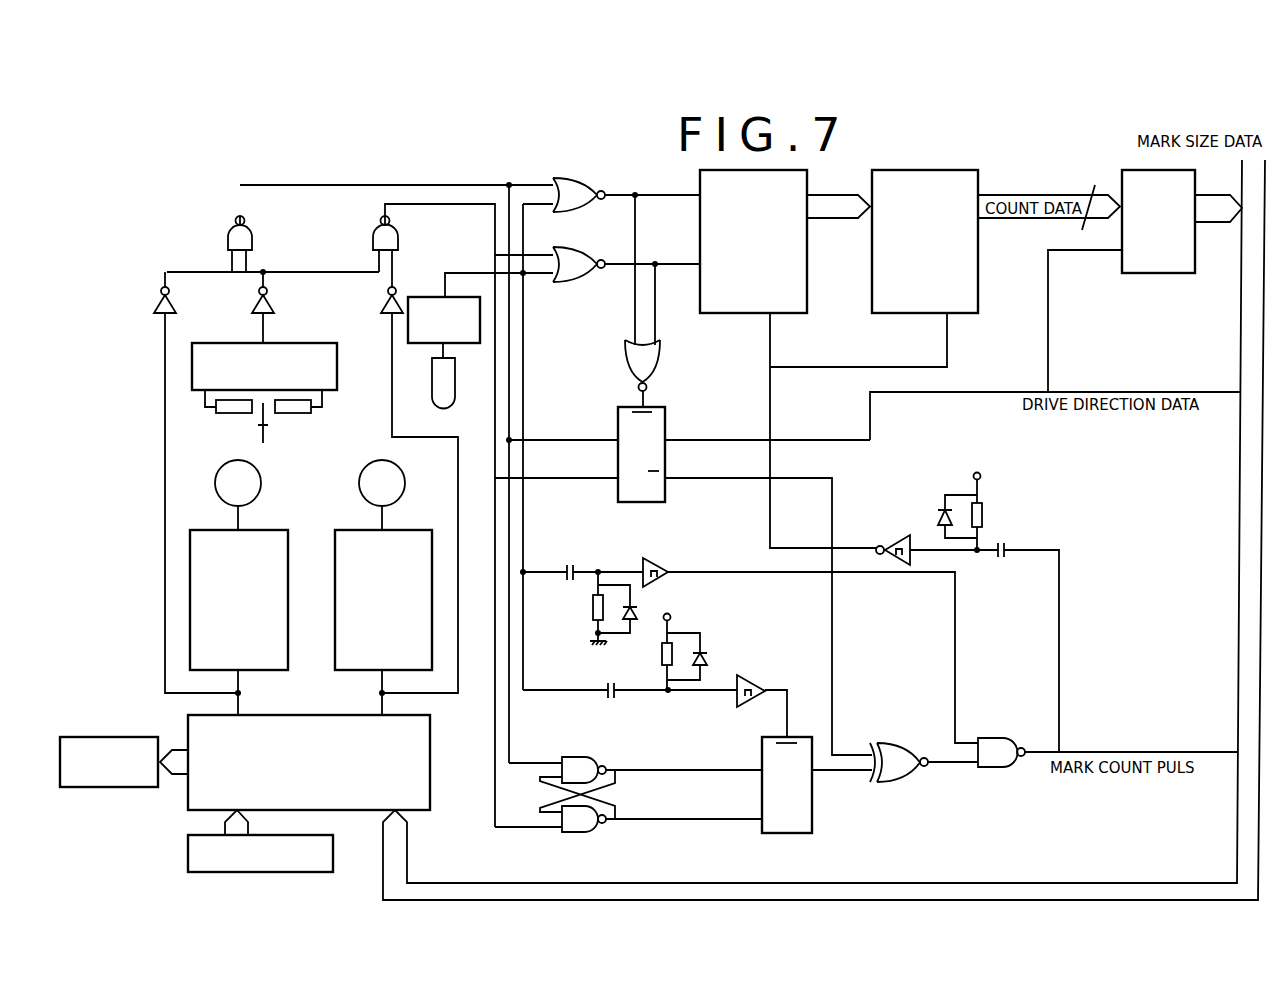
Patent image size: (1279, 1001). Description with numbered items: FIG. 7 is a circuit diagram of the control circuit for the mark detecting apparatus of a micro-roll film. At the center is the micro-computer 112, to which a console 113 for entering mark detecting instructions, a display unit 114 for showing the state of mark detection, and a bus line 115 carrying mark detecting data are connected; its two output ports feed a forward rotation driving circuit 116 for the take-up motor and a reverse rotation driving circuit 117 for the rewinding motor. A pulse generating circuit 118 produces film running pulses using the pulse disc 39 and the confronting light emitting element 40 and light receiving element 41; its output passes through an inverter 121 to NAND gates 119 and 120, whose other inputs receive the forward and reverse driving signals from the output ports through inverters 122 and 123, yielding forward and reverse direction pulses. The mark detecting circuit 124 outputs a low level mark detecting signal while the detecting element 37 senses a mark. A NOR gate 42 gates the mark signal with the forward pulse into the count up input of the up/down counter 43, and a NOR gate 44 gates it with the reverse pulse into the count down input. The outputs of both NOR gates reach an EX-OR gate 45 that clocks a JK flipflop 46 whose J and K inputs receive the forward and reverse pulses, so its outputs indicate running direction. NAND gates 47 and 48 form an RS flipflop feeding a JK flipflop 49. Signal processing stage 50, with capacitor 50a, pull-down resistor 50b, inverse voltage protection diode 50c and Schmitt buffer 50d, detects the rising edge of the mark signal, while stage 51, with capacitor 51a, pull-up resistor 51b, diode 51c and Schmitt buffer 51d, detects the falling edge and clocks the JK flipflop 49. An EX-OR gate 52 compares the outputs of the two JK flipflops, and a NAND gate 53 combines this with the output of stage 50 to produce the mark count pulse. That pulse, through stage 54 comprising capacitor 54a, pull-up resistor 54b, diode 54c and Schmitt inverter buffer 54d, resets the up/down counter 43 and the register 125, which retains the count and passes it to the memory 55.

The NAND gate 119 is at (230, 228).
The NAND gate 120 is at (412, 224).
The inverter 121 is at (282, 296).
The inverter 122 is at (158, 303).
The inverter 123 is at (400, 299).
The mark detecting circuit 124 is at (466, 296).
The pulse generating circuit 118 is at (318, 333).
The light emitting element 40 is at (232, 414).
The light receiving element 41 is at (293, 414).
The pulse disc 39 is at (264, 434).
The detecting element 37 is at (455, 374).
The forward rotation driving circuit 116 is at (264, 530).
The reverse rotation driving circuit 117 is at (408, 530).
The micro-computer 112 is at (430, 785).
The display unit 114 is at (132, 787).
The console 113 is at (258, 872).
The NOR gate 42 is at (565, 180).
The NOR gate 44 is at (585, 252).
The up/down counter 43 is at (808, 315).
The register 125 is at (958, 170).
The memory 55 is at (1183, 275).
The EX-OR gate 45 is at (660, 360).
The JK flipflop 46 is at (667, 421).
The signal processing stage 50 is at (723, 540).
The capacitor 50a is at (590, 556).
The pull-down resistor 50b is at (590, 617).
The inverse voltage protection diode 50c is at (636, 610).
The Schmitt buffer 50d is at (659, 563).
The signal processing stage 51 is at (772, 712).
The capacitor 51a is at (592, 686).
The pull-up resistor 51b is at (661, 655).
The diode 51c is at (718, 650).
The Schmitt buffer 51d is at (778, 666).
The signal processing stage 54 is at (1017, 462).
The capacitor 54a is at (996, 560).
The pull-up resistor 54b is at (982, 517).
The diode 54c is at (940, 511).
The Schmitt inverter buffer 54d is at (895, 534).
The NAND gate 47 is at (563, 757).
The NAND gate 48 is at (575, 834).
The JK flipflop 49 is at (812, 820).
The EX-OR gate 52 is at (898, 784).
The NAND gate 53 is at (1003, 768).
The bus line 115 is at (745, 897).